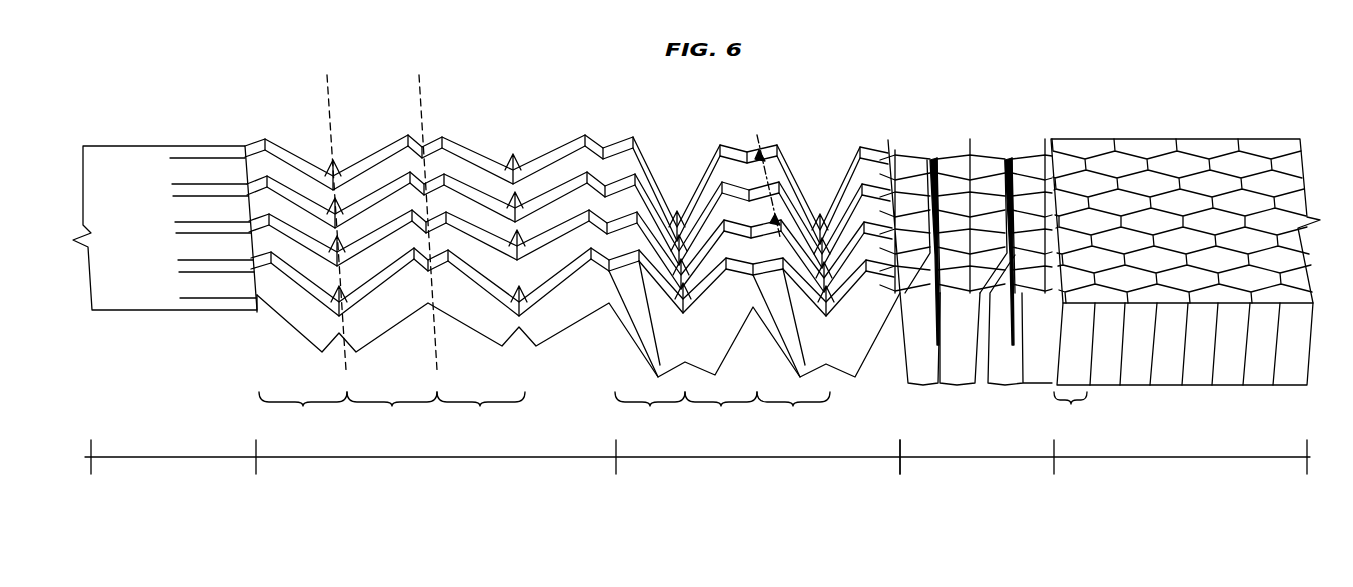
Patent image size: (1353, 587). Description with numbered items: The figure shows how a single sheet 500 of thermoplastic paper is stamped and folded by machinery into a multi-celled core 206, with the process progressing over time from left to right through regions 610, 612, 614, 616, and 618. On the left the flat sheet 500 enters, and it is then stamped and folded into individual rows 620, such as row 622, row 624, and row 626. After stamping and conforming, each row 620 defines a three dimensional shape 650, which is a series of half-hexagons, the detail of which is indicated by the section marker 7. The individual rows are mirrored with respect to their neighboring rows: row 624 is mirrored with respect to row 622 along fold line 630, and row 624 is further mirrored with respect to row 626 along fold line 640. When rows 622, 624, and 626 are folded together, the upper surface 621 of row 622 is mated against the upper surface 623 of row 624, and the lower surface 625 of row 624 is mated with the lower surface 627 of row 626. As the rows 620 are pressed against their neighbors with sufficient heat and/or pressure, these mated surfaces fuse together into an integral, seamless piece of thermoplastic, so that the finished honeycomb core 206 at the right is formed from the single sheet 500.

The sheet 500 is at (134, 160).
The core 206 is at (1225, 160).
The region 610 is at (164, 458).
The region 612 is at (434, 458).
The region 614 is at (770, 458).
The region 616 is at (978, 458).
The region 618 is at (1182, 458).
The row 620 is at (852, 411).
The upper surface 621 is at (274, 144).
The row 622 is at (303, 411).
The upper surface 623 is at (385, 150).
The row 624 is at (392, 411).
The lower surface 625 is at (405, 326).
The row 626 is at (481, 411).
The lower surface 627 is at (490, 336).
The fold line 630 is at (333, 106).
The fold line 640 is at (428, 100).
The three dimensional shape 650 is at (269, 348).
The section line 7- 7 is at (762, 178).